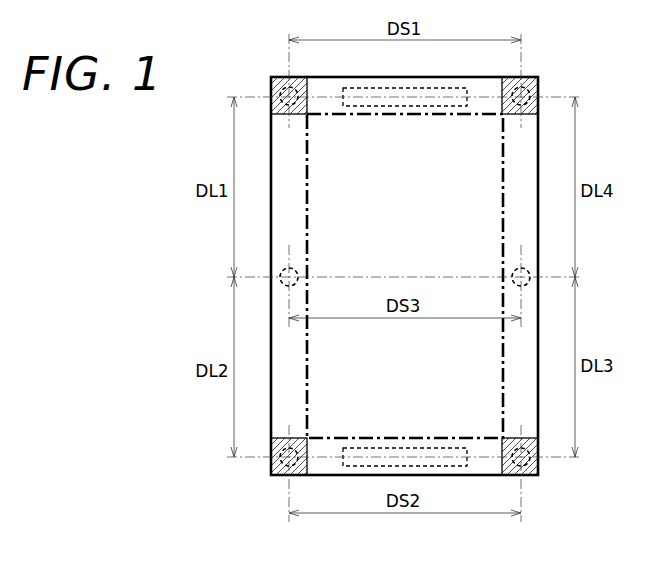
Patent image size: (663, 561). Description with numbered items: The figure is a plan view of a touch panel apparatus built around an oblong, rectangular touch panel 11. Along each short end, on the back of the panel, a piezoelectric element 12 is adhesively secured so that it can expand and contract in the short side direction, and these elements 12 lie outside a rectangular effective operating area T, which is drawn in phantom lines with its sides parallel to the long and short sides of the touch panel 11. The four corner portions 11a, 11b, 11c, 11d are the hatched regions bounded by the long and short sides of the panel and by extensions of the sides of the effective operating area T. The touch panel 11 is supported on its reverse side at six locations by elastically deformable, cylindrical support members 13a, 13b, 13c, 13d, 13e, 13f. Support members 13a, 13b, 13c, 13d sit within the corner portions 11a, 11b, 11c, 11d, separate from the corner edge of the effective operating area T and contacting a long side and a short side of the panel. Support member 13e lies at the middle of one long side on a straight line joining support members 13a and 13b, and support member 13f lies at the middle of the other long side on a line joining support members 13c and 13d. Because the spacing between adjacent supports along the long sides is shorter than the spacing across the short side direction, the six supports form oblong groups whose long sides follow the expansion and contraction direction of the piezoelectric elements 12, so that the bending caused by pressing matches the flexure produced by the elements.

The touch panel 11 is at (480, 166).
The corner portion 11a is at (284, 84).
The corner portion 11b is at (281, 474).
The corner portion 11c is at (527, 476).
The corner portion 11d is at (537, 92).
The piezoelectric element 12 is at (405, 107).
The support member 13a is at (280, 89).
The support member 13b is at (282, 464).
The support member 13c is at (529, 463).
The support member 13d is at (528, 90).
The support member 13e is at (294, 270).
The support member 13f is at (515, 268).
The effective operating area T is at (308, 376).